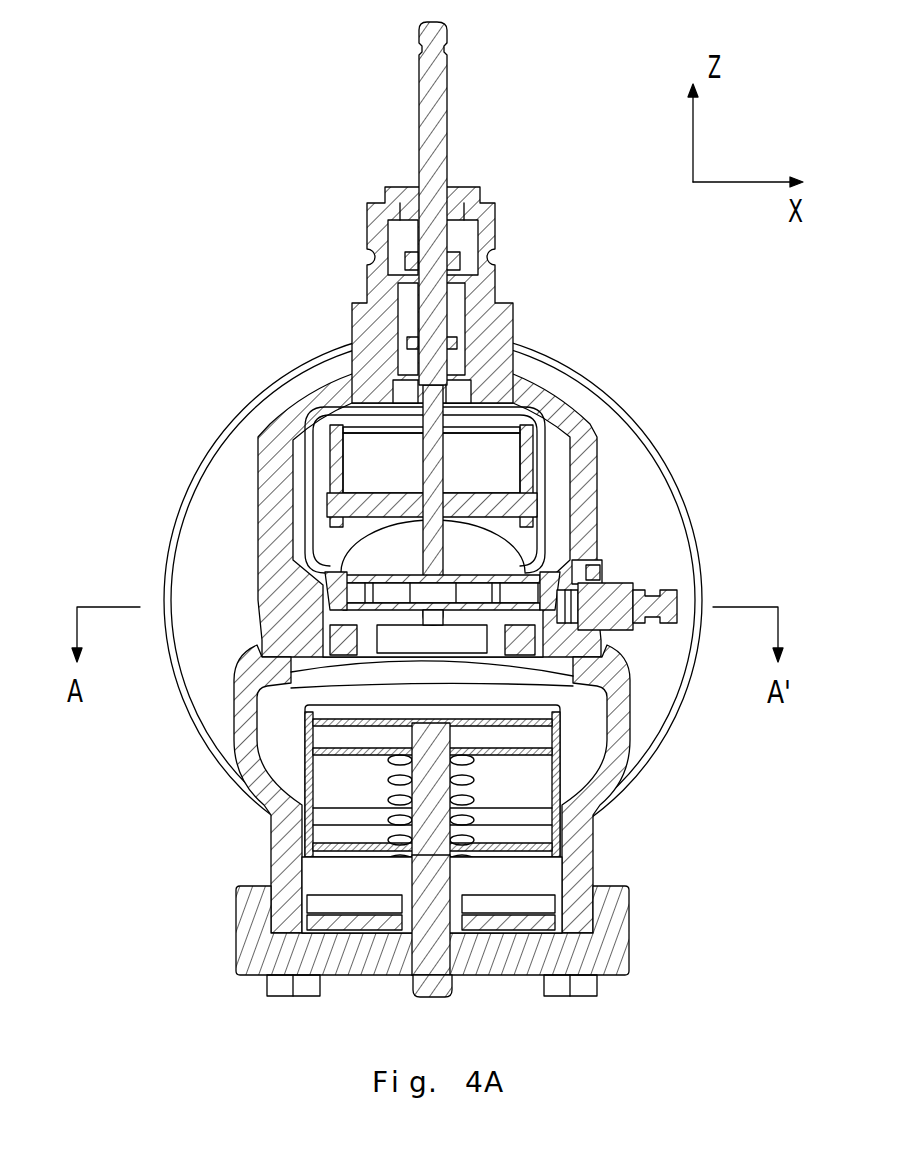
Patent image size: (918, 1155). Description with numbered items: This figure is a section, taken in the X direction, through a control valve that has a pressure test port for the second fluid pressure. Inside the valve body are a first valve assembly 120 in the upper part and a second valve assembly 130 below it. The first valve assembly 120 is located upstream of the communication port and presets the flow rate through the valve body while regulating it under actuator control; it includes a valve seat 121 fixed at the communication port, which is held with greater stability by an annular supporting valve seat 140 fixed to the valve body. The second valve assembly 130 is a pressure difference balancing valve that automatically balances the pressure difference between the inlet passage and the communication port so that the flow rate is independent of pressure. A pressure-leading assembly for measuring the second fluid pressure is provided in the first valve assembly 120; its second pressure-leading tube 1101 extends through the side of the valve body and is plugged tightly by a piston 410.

The first valve assembly 120 is at (551, 441).
The valve seat 121 is at (527, 570).
The second pressure-leading tube 1101 is at (603, 570).
The piston 410 is at (677, 593).
The supporting valve seat 140 is at (598, 712).
The second valve assembly 130 is at (582, 760).